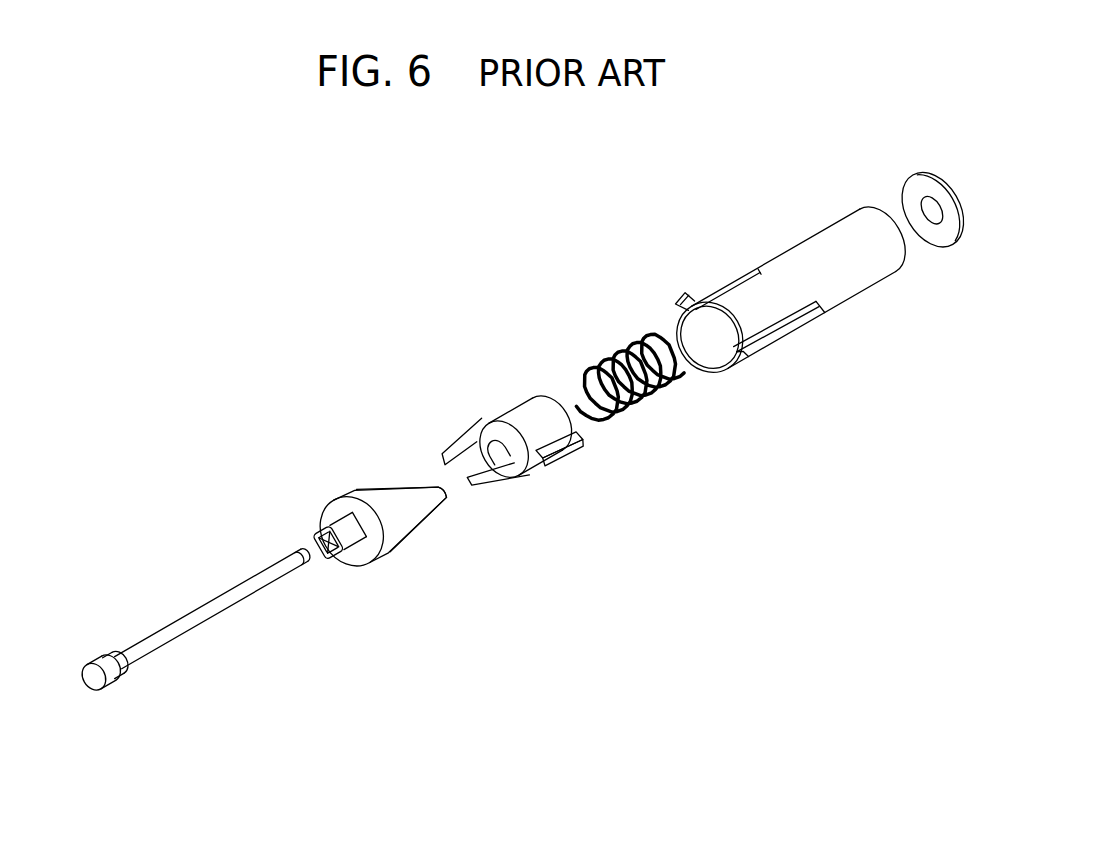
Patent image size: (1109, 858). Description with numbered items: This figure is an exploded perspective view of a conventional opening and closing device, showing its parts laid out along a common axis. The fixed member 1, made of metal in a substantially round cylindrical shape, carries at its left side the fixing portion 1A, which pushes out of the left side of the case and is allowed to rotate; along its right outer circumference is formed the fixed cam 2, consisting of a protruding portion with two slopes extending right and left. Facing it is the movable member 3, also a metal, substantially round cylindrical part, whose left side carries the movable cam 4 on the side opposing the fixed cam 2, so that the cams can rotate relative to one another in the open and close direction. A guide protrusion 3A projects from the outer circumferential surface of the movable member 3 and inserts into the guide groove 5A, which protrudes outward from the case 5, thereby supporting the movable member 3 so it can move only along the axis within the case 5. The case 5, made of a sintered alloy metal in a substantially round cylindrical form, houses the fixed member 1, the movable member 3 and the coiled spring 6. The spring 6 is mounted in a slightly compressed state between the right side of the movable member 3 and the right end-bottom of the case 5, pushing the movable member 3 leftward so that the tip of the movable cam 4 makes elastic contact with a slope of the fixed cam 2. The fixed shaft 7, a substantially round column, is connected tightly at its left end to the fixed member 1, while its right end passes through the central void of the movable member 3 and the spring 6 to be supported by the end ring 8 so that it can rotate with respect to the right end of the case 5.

The fixed member 1 is at (387, 553).
The fixing portion 1A is at (335, 527).
The fixed cam 2 is at (428, 506).
The movable member 3 is at (517, 412).
The guide protrusion 3A is at (565, 460).
The movable cam 4 is at (493, 480).
The case 5 is at (850, 280).
The guide groove 5A is at (748, 365).
The spring 6 is at (622, 360).
The fixed shaft 7 is at (211, 615).
The end ring 8 is at (905, 190).